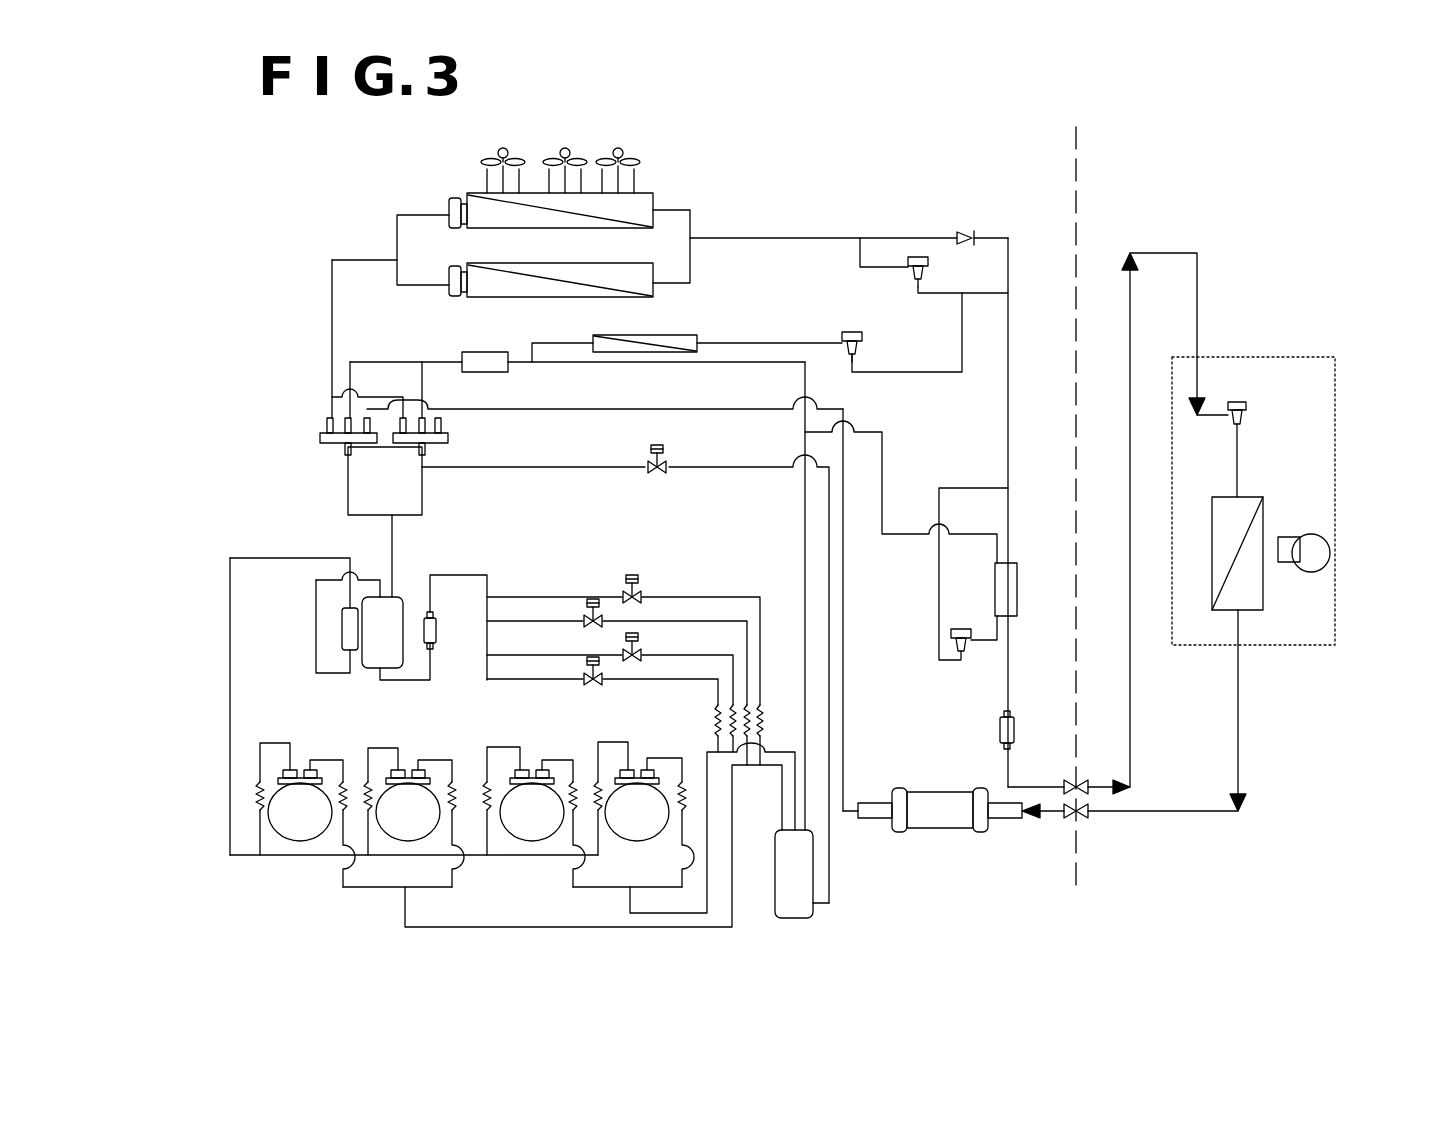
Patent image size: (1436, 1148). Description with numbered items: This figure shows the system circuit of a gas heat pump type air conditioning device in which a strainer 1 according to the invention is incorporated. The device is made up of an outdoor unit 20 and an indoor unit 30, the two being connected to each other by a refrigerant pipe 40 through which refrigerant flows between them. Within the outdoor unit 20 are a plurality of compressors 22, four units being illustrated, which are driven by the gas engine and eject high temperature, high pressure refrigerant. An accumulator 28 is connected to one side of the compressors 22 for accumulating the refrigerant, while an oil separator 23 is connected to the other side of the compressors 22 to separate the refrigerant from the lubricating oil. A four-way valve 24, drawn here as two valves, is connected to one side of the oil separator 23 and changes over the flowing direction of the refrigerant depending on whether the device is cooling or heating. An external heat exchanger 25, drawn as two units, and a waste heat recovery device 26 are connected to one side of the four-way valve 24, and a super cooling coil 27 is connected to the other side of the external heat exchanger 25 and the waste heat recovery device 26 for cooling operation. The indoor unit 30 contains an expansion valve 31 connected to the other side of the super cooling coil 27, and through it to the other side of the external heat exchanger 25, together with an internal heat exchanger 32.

The liquid receiver 1 is at (945, 832).
The outdoor unit 20 is at (1063, 159).
The compressors 22 is at (298, 870).
The oil separator 23 is at (400, 597).
The four-way valve 24 is at (333, 455).
The external heat exchanger 25 is at (655, 197).
The waste heat recovery device 26 is at (697, 336).
The super cooling coil 27 is at (1017, 616).
The accumulator 28 is at (813, 918).
The indoor unit 30 is at (1111, 159).
The expansion valve 31 is at (1246, 405).
The internal heat exchanger 32 is at (1263, 497).
The refrigerant pipe 40 is at (1132, 700).